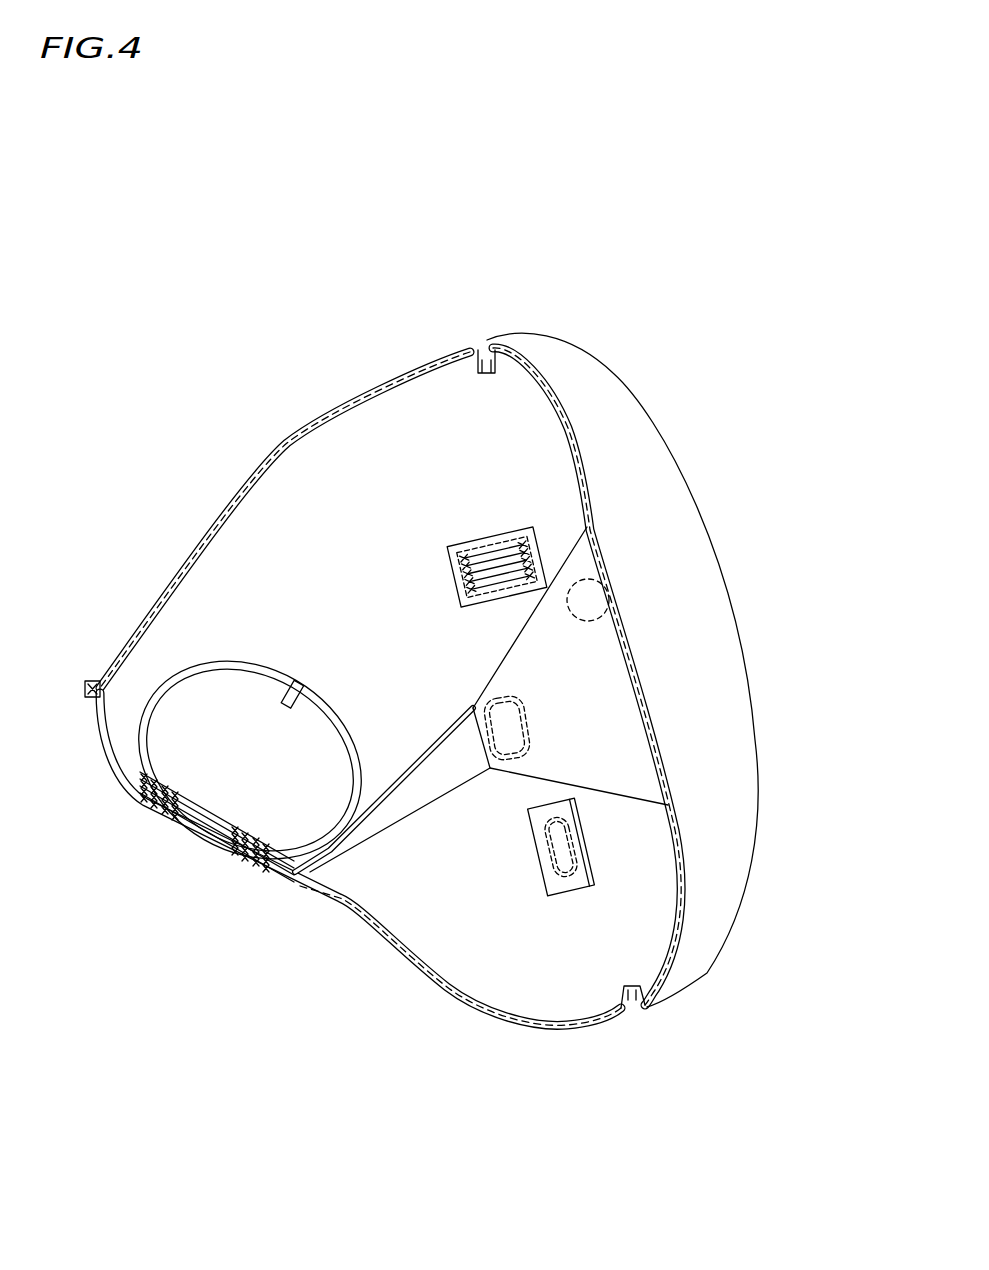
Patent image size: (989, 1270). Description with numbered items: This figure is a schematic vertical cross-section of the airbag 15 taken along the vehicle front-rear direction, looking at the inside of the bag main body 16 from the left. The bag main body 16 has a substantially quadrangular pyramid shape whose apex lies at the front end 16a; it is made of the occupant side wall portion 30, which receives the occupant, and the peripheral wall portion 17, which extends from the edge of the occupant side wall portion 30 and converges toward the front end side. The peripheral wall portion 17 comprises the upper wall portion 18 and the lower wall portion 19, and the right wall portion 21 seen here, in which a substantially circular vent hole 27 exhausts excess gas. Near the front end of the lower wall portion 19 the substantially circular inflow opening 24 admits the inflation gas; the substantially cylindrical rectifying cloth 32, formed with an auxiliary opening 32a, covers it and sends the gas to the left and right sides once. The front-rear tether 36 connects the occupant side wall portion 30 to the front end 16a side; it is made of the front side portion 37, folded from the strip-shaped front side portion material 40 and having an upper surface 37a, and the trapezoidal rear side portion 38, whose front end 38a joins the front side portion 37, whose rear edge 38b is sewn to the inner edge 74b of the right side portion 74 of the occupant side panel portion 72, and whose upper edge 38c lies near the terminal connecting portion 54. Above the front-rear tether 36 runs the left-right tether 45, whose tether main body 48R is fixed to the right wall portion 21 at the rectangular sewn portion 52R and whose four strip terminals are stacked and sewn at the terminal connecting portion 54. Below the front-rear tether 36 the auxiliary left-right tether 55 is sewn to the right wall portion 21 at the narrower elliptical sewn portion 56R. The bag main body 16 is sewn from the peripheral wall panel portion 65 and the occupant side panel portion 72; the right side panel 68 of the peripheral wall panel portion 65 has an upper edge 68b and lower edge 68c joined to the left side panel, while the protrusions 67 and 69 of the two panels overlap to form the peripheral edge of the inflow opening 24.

The airbag 15 is at (680, 228).
The bag main body 16 is at (375, 323).
The front end 16a is at (100, 727).
The peripheral wall portion 17 is at (245, 470).
The upper wall portion 18 is at (335, 435).
The lower wall portion 19 is at (427, 983).
The right wall portion 21 is at (420, 877).
The inflow opening 24 is at (207, 843).
The vent hole 27 is at (600, 595).
The occupant side wall portion 30 is at (663, 400).
The rectifying cloth 32 is at (255, 655).
The auxiliary opening 32a is at (345, 700).
The front-rear tether 36 is at (443, 708).
The front side portion 37 is at (432, 793).
The upper surface 37a is at (415, 760).
The rear side portion 38 is at (628, 787).
The front end 38a is at (493, 773).
The rear edge 38b is at (650, 707).
The upper edge 38c is at (560, 547).
The front side portion material 40 is at (377, 822).
The left-right tether 45 is at (450, 457).
The tether main body 48R is at (472, 542).
The sewn portion 52R is at (500, 545).
The terminal connecting portion 54 is at (487, 588).
The auxiliary left-right tether 55 is at (567, 903).
The sewn portion 56R is at (548, 883).
The peripheral wall panel portion 65 is at (195, 597).
The protrusion 67 is at (150, 813).
The right side panel 68 is at (140, 527).
The upper edge 68b is at (297, 483).
The lower edge 68c is at (447, 977).
The protrusion 69 is at (253, 870).
The occupant side panel portion 72 is at (655, 455).
The right side portion 74 is at (758, 425).
The inner edge 74b is at (650, 747).